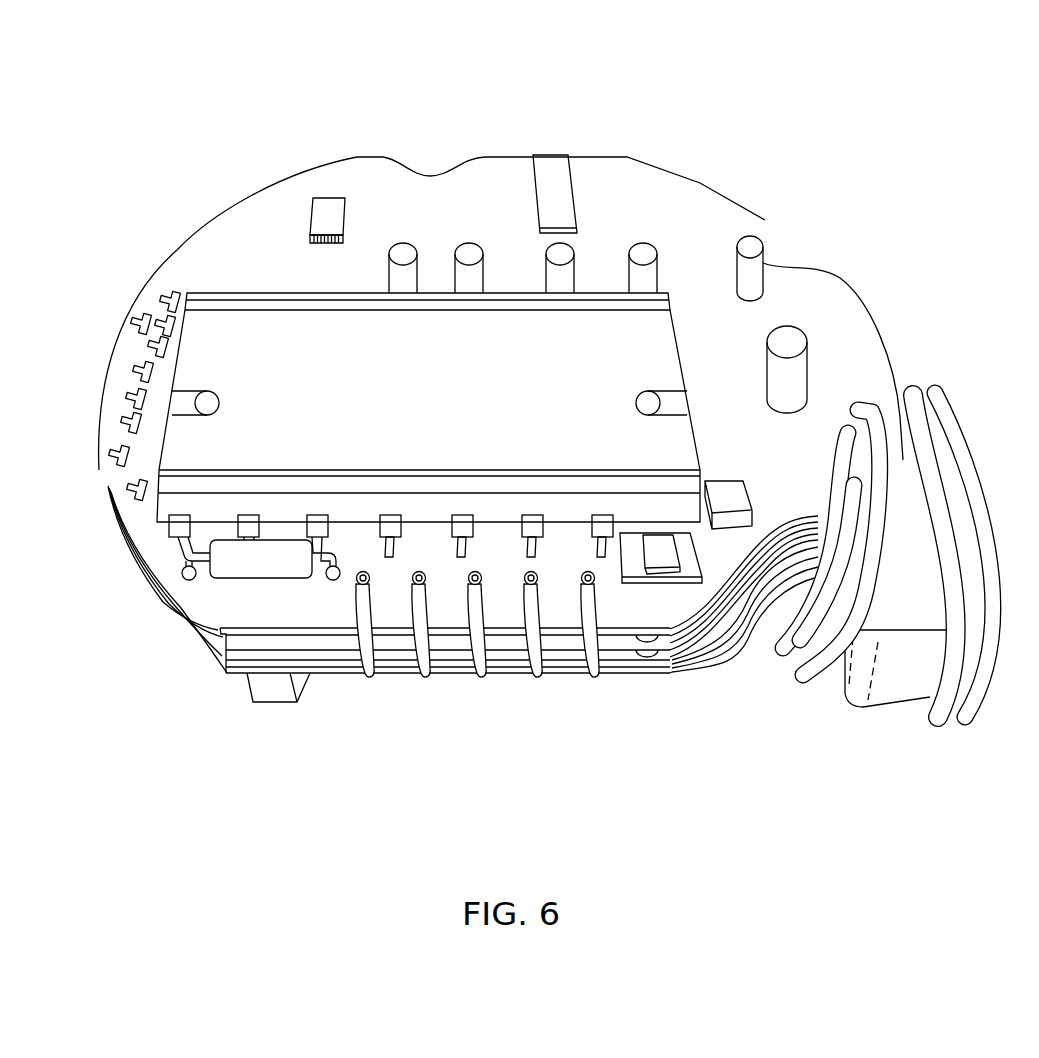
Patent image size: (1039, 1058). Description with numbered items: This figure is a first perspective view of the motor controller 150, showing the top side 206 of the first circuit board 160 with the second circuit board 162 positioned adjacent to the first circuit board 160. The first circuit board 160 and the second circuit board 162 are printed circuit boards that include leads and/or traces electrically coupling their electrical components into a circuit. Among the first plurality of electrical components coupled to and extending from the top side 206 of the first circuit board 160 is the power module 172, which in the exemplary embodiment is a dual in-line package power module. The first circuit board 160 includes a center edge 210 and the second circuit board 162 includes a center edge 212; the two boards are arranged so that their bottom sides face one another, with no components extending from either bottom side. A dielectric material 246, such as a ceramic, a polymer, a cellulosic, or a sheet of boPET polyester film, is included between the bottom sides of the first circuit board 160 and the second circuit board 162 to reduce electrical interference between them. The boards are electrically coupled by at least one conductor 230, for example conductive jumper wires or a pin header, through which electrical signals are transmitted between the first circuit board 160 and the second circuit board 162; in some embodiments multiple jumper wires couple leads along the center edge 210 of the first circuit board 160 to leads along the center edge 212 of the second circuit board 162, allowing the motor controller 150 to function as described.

The motor controller 150 is at (681, 166).
The power module 172 is at (230, 337).
The top side 206 is at (835, 337).
The dielectric material 246 is at (190, 617).
The center edge 210 is at (228, 653).
The center edge 212 is at (317, 677).
The conductor 230 is at (593, 643).
The first circuit board 160 is at (685, 633).
The second circuit board 162 is at (677, 677).